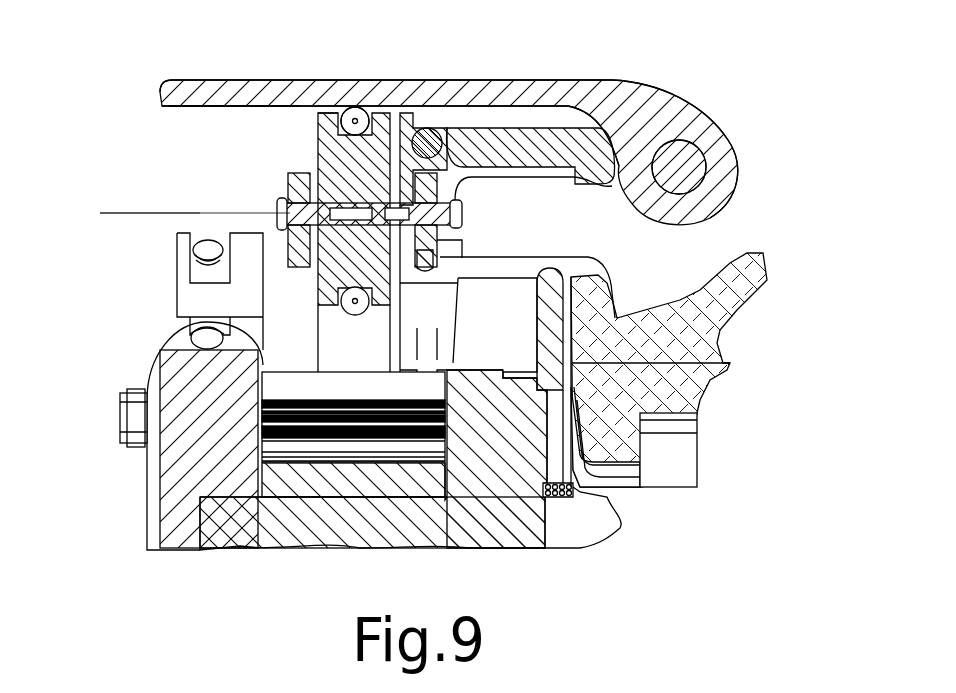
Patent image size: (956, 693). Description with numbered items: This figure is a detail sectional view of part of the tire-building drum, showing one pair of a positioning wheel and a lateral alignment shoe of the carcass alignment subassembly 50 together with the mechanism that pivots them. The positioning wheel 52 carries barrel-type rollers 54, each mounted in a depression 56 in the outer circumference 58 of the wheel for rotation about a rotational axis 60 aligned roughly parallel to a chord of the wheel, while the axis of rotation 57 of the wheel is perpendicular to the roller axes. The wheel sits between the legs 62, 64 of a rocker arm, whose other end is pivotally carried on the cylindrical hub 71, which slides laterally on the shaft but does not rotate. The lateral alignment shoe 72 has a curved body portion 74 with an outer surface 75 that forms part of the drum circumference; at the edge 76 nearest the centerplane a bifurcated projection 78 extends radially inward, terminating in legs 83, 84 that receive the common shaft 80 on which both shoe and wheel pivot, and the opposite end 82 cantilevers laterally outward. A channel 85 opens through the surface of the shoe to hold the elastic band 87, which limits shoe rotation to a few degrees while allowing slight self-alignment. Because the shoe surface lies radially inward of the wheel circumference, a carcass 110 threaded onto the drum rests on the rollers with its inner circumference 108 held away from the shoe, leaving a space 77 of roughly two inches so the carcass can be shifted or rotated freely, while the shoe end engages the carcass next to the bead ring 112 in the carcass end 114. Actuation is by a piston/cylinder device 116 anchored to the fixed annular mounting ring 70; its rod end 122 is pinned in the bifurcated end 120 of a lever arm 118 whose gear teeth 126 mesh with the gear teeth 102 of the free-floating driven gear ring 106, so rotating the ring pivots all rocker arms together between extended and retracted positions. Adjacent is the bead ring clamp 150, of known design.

The carcass alignment subassembly 50 is at (430, 128).
The positioning wheel 52 is at (318, 128).
The barrel-type rollers 54 is at (352, 112).
The depression 56 is at (394, 128).
The axis of rotation of the wheel 57 is at (158, 212).
The outer circumference of the wheel 58 is at (328, 112).
The rotational axis 60 is at (360, 120).
The leg of rocker arm 62 is at (298, 175).
The leg of rocker arm 64 is at (435, 270).
The annular mounting ring 70 is at (170, 362).
The cylindrical hub 71 is at (492, 492).
The lateral alignment shoe 72 is at (500, 128).
The body portion 74 is at (588, 112).
The outer surface 75 is at (538, 128).
The edge of the shoe 76 is at (416, 38).
The space 77 is at (505, 120).
The bifurcated projection 78 is at (468, 180).
The shaft 80 is at (448, 240).
The opposite end of the shoe 82 is at (642, 86).
The leg of bifurcated projection 83 is at (413, 268).
The leg of bifurcated projection 84 is at (458, 252).
The channel 85 is at (450, 92).
The elastic band 87 is at (438, 128).
The gear teeth 102 is at (342, 398).
The driven gear ring 106 is at (425, 500).
The inner circumference of the carcass 108 is at (200, 108).
The carcass 110 is at (216, 88).
The bead ring 112 is at (720, 132).
The end of the carcass 114 is at (724, 176).
The piston/cylinder device 116 is at (148, 503).
The lever arm 118 is at (252, 238).
The bifurcated end 120 is at (178, 244).
The end of piston/cylinder rod 122 is at (208, 242).
The gear teeth 126 is at (366, 470).
The bead ring clamp 150 is at (658, 286).